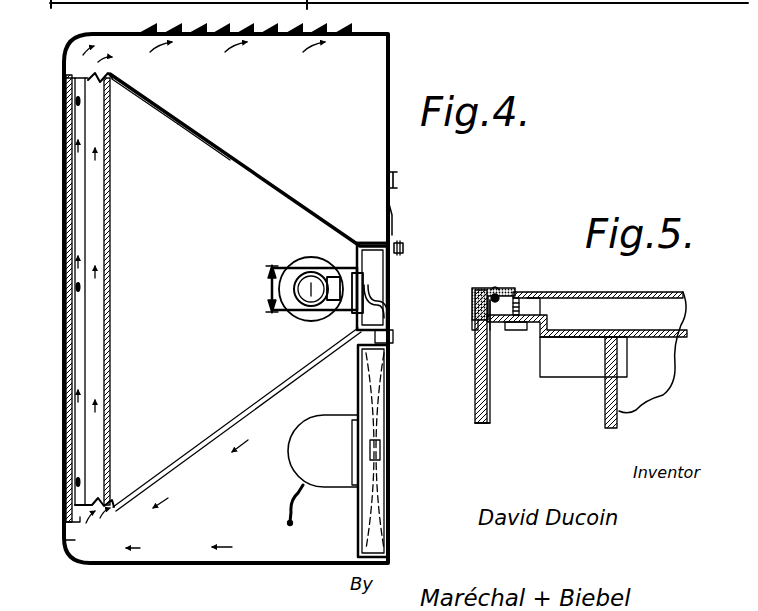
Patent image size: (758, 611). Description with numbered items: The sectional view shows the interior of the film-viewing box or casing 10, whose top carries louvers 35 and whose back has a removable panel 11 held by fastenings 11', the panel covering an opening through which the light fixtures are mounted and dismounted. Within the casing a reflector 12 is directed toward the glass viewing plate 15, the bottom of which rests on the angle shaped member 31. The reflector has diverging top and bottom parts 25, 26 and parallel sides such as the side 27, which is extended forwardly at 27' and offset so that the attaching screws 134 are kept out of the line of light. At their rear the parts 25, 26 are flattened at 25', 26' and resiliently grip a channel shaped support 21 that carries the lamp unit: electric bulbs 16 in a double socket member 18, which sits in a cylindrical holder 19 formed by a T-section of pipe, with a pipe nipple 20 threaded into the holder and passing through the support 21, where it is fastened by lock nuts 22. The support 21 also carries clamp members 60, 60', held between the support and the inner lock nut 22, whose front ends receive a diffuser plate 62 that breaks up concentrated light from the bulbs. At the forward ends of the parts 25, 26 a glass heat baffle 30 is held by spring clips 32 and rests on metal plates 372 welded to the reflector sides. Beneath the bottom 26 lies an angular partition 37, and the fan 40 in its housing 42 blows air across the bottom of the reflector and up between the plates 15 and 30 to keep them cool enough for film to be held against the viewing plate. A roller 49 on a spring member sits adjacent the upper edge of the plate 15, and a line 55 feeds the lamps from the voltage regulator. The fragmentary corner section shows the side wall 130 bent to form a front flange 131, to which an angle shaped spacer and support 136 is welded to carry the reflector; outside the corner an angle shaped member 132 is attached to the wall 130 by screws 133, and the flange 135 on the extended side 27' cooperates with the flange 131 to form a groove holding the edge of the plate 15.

In FIG. 4, the box or casing 10 is at (378, 30).
In FIG. 4, the removable panel 11 is at (416, 180).
In FIG. 4, the fastenings 11' is at (415, 242).
In FIG. 4, the reflector 12 is at (268, 190).
In FIG. 4, the glass viewing plate 15 is at (68, 243).
In FIG. 5, the glass viewing plate 15 is at (478, 395).
In FIG. 4, the electric bulbs 16 is at (298, 262).
In FIG. 4, the double socket member 18 is at (312, 293).
In FIG. 4, the cylindrical holder 19 is at (347, 282).
In FIG. 4, the pipe nipple 20 is at (353, 280).
In FIG. 4, the channel shaped support 21 is at (362, 262).
In FIG. 4, the lock nuts 22 is at (353, 310).
In FIG. 4, the top part of reflector 25 is at (229, 157).
In FIG. 4, the flattened rear end of top part 25' is at (414, 213).
In FIG. 4, the bottom part of reflector 26 is at (237, 419).
In FIG. 4, the flattened rear end of bottom part 26' is at (408, 335).
In FIG. 4, the side of reflector 27 is at (249, 160).
In FIG. 5, the side of reflector 27 is at (598, 299).
In FIG. 4, the forward extension of reflector side 27' is at (114, 291).
In FIG. 5, the forward extension of reflector side 27' is at (587, 336).
In FIG. 4, the heat baffle 30 is at (106, 178).
In FIG. 5, the heat baffle 30 is at (607, 410).
In FIG. 4, the angle shaped member 31 is at (72, 520).
In FIG. 5, the angle shaped member 31 is at (490, 385).
In FIG. 4, the spring clips 32 is at (118, 77).
In FIG. 4, the louvers 35 is at (325, 31).
In FIG. 4, the angular partition 37 is at (310, 542).
In FIG. 4, the air circulating fan 40 is at (347, 465).
In FIG. 4, the fan housing 42 is at (392, 367).
In FIG. 4, the roller 49 is at (62, 100).
In FIG. 4, the line 55 is at (387, 318).
In FIG. 4, the clamp member 60 is at (254, 256).
In FIG. 4, the clamp member 60' is at (260, 328).
In FIG. 4, the diffuser plate 62 is at (268, 286).
In FIG. 5, the side wall 130 is at (655, 291).
In FIG. 5, the front flange 131 is at (470, 307).
In FIG. 5, the angle shaped member 132 is at (482, 288).
In FIG. 5, the screws 133 is at (493, 285).
In FIG. 5, the attaching screws 134 is at (517, 303).
In FIG. 5, the flange 135 is at (490, 333).
In FIG. 5, the vertical spacer and support 136 is at (528, 322).
In FIG. 5, the metal plates 372 is at (580, 360).